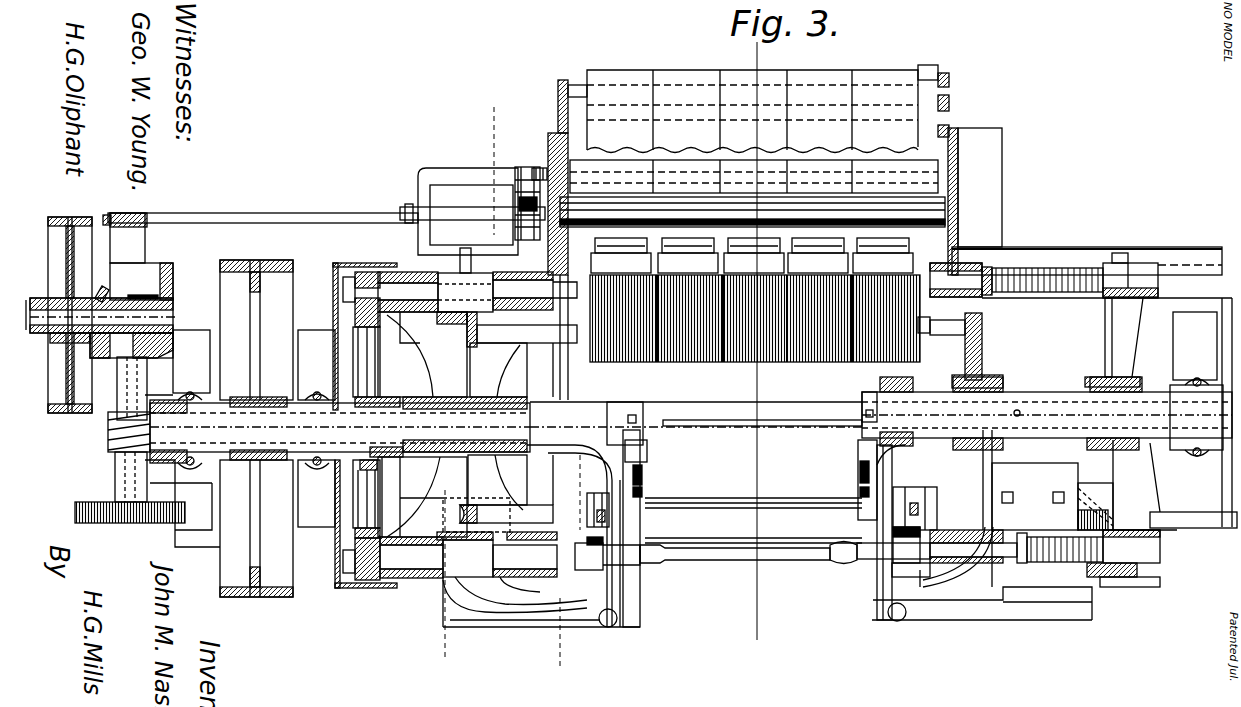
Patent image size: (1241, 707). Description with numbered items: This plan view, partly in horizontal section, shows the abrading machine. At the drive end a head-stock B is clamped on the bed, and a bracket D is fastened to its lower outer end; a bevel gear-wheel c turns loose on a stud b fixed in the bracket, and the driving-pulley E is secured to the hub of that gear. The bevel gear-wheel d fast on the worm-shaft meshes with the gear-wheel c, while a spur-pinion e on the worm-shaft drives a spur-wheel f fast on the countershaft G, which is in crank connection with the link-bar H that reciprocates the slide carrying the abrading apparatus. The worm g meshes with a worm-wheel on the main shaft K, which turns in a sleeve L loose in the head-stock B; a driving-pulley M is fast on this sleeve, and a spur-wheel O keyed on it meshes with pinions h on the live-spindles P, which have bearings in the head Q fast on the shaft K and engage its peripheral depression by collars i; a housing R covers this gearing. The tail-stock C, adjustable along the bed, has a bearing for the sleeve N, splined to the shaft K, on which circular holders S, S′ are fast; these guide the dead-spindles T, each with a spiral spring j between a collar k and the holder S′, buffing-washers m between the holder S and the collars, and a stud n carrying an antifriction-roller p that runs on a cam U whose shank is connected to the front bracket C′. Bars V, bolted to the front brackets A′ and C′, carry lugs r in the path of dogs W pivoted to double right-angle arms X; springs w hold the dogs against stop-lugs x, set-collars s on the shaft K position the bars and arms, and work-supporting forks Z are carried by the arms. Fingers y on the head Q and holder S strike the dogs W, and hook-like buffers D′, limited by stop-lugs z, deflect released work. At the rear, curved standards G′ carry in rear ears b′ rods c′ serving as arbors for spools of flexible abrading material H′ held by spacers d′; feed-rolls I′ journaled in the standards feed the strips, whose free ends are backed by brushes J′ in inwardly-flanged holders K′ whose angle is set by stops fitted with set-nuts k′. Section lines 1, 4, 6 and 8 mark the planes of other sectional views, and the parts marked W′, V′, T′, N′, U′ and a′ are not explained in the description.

The driving-pulley E is at (48, 256).
The stud b is at (40, 300).
The section line 4 4 is at (22, 327).
The bevel gear-wheel c is at (102, 290).
The bracket D is at (168, 285).
The countershaft G is at (137, 240).
The link-bar H is at (205, 214).
The bevel gear-wheel d is at (165, 348).
The worm g is at (108, 430).
The spur-wheel f is at (98, 502).
The spur-pinion e is at (125, 523).
The driving-pulley M is at (262, 260).
The head-stock B is at (203, 550).
The sleeve L is at (340, 430).
The pinions h is at (368, 272).
The housing R is at (344, 577).
The spur-wheel O is at (382, 376).
The head Q is at (545, 378).
The collars i is at (458, 305).
The live-spindles P is at (540, 297).
The fingers y is at (562, 340).
The post W′ is at (460, 258).
The bracket V′ is at (420, 175).
The cylinder T′ is at (500, 199).
The gear N′ is at (518, 179).
The pinion U′ is at (536, 168).
The section line 8 8 is at (507, 118).
The standards G′ is at (546, 132).
The rear ears b′ is at (562, 80).
The spacers d′ is at (578, 82).
The spools of flexible abrading material H′ is at (684, 67).
The section line 1 1 is at (740, 52).
The end frame a′ is at (958, 142).
The rods c′ is at (950, 88).
The feed-rolls I′ is at (752, 212).
The holders K′ is at (752, 255).
The set-nut k′ is at (898, 243).
The brushes J′ is at (755, 318).
The dead-spindles T is at (956, 272).
The collar k is at (992, 270).
The spiral spring j is at (1048, 268).
The antifriction-roller p is at (1122, 260).
The stud n is at (1140, 265).
The buffing-washers m is at (990, 300).
The circular holder S is at (984, 325).
The circular holder S′ is at (1105, 324).
The tail-stock C is at (1200, 306).
The sleeve N is at (1080, 412).
The main shaft K is at (793, 405).
The set-collars s is at (643, 404).
The hook-like buffers D′ is at (646, 468).
The double right-angle arm X is at (646, 482).
The stop-lugs z is at (646, 488).
The dog W is at (590, 498).
The lug r is at (602, 497).
The spiral spring w is at (615, 515).
The stop-lug x is at (598, 528).
The work-supporting fork Z is at (598, 572).
The bars V is at (622, 596).
The front bracket A′ is at (458, 586).
The section line 6 6 is at (566, 452).
The cam U is at (1096, 488).
The front bracket C′ is at (1043, 612).